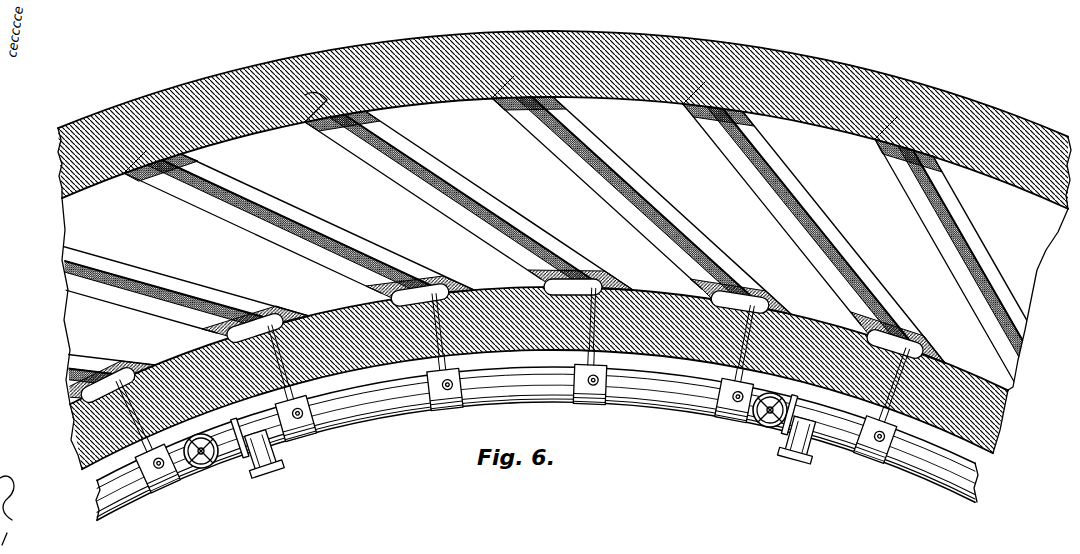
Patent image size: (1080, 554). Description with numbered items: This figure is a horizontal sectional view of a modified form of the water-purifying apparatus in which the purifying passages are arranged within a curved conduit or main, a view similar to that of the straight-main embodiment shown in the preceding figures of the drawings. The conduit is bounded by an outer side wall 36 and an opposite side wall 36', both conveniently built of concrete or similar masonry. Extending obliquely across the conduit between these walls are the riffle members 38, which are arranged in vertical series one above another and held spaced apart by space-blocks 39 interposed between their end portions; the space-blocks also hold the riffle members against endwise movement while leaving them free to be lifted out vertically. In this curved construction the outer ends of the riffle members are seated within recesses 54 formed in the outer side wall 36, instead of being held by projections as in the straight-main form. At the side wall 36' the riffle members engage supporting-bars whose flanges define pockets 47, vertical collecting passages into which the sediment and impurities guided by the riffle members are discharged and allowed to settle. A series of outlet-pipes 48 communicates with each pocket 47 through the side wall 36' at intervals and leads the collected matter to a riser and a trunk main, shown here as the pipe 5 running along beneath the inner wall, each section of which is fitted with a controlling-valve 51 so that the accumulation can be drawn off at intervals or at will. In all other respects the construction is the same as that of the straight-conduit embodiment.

The side wall 36 is at (564, 110).
The side wall 36' is at (525, 378).
The riffle members 38 is at (613, 202).
The space-blocks 39 is at (753, 294).
The pockets 47 is at (774, 313).
The recesses 54 is at (312, 100).
The pipe 5 is at (402, 408).
The outlet-pipes 48 is at (160, 449).
The controlling-valve 51 is at (763, 426).